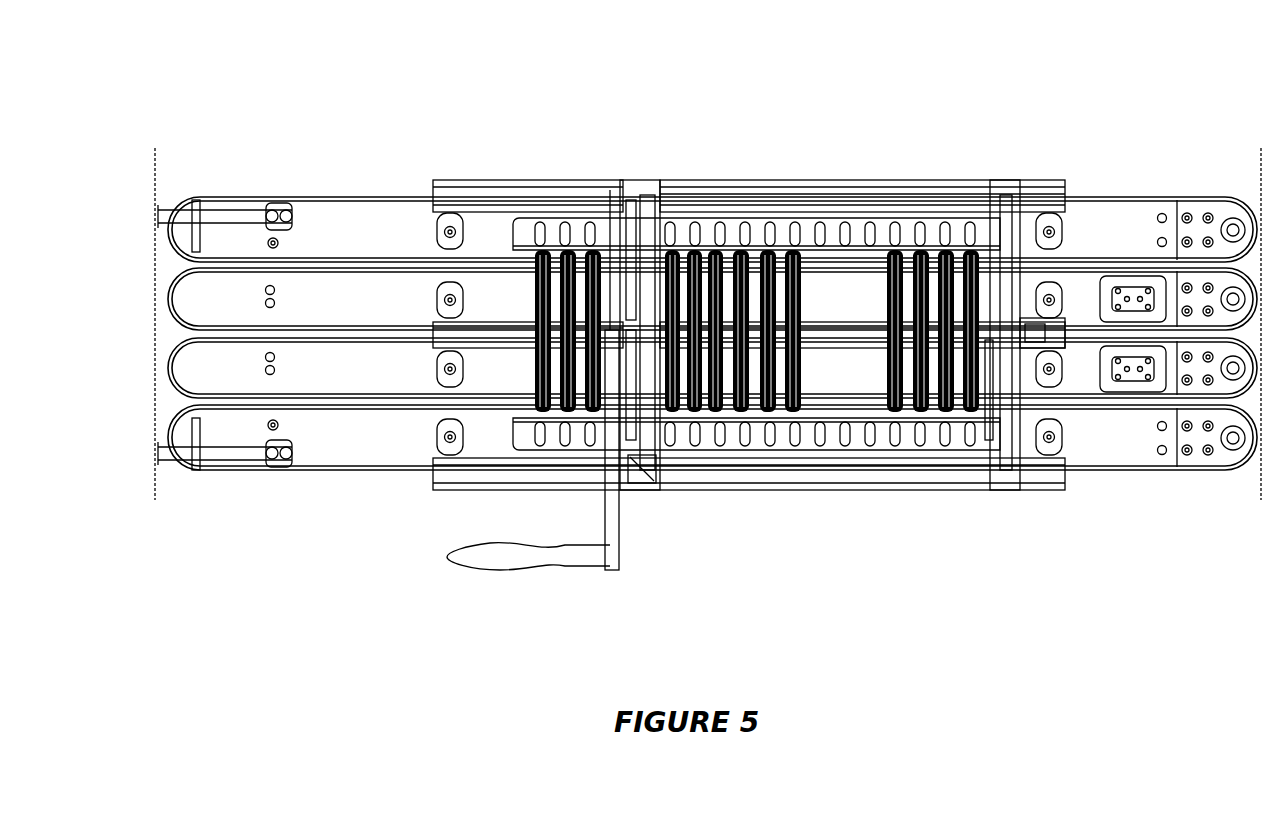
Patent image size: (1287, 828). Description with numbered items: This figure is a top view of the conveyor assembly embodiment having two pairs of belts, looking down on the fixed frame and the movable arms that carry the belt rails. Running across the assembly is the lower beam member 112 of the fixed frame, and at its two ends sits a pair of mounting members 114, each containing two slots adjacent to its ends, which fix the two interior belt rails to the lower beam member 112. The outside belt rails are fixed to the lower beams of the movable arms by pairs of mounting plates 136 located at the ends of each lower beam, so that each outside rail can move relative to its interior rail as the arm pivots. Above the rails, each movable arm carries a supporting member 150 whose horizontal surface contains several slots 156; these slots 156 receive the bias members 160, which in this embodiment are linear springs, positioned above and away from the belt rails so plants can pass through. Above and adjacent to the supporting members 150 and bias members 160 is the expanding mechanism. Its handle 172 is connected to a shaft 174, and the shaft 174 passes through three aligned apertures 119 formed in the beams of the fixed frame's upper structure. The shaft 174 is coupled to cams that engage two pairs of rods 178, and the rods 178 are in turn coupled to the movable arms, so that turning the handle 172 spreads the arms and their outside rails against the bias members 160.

The lower beam member 112 is at (516, 310).
The mounting members 114 is at (1123, 330).
The aligned apertures 119 is at (850, 328).
The mounting plates 136 is at (462, 225).
The supporting members 150 is at (722, 235).
The slots 156 is at (655, 250).
The bias members 160 is at (845, 470).
The handle 172 is at (588, 570).
The shaft 174 is at (775, 245).
The rods 178 is at (595, 258).